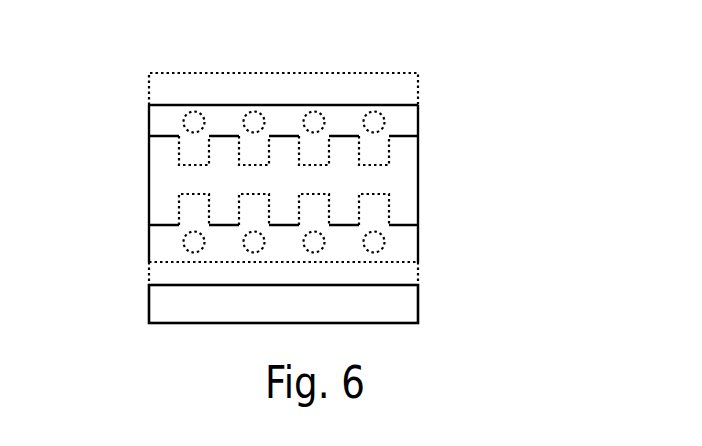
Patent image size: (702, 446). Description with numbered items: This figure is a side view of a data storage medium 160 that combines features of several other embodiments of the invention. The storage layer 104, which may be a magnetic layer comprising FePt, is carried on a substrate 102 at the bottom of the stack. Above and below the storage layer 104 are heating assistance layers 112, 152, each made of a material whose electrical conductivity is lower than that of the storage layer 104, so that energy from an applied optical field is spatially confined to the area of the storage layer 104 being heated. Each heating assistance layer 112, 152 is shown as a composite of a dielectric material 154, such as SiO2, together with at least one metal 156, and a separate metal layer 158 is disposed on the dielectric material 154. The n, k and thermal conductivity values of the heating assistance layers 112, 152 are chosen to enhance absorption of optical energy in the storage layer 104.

The data storage medium 160 is at (445, 45).
The metal layer 158 is at (293, 92).
The metal 156 is at (384, 109).
The dielectric material 154 is at (403, 122).
The heating assistance layer 112 is at (137, 73).
The heating assistance layer 152 is at (283, 180).
The storage layer 104 is at (160, 183).
The substrate 102 is at (301, 313).